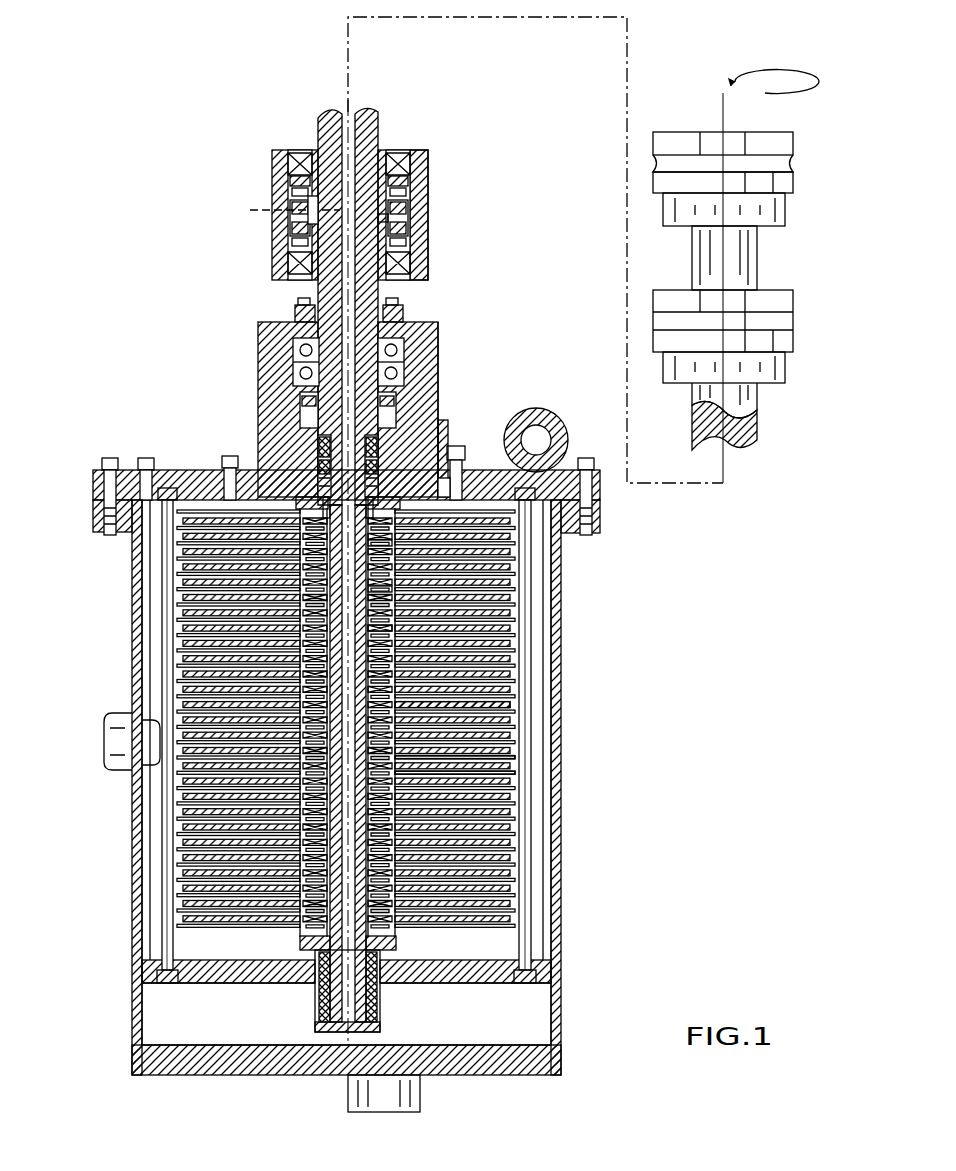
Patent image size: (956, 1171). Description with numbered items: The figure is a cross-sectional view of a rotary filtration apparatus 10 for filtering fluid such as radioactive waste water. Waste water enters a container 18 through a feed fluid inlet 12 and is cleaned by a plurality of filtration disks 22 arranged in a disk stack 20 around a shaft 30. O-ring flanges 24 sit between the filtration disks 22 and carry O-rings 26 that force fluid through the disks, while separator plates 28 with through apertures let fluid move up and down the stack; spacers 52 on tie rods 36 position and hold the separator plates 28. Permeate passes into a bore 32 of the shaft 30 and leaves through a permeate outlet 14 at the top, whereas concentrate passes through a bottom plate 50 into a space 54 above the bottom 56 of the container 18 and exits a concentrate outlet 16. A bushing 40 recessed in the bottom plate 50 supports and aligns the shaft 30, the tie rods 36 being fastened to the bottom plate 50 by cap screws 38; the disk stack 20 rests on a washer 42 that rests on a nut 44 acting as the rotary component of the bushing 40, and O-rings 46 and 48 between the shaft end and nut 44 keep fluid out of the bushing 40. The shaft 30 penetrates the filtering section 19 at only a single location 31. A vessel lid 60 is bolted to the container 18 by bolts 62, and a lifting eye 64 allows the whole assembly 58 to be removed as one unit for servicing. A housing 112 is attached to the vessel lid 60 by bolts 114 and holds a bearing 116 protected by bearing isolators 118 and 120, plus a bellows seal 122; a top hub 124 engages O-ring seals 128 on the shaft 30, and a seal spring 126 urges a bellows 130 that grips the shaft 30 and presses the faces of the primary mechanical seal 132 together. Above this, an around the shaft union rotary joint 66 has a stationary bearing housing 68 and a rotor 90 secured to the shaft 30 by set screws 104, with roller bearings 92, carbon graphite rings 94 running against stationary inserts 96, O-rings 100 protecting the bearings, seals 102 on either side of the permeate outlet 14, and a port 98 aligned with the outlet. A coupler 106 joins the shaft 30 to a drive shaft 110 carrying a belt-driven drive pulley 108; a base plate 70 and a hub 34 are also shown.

The rotary filtration apparatus 10 is at (158, 85).
The feed fluid inlet 12 is at (165, 742).
The permeate outlet 14 is at (300, 210).
The concentrate outlet 16 is at (365, 1110).
The container 18 is at (140, 600).
The filtering section 19 is at (150, 630).
The disk stack 20 is at (510, 830).
The filtration disks 22 is at (512, 710).
The O-ring flanges 24 is at (410, 632).
The O-rings 26 is at (400, 590).
The separator plates 28 is at (512, 780).
The shaft 30 is at (375, 296).
The single location 31 is at (265, 484).
The bore 32 is at (330, 296).
The hub 34 is at (400, 545).
The tie rods 36 is at (170, 882).
The cap screws 38 is at (170, 980).
The bushing 40 is at (325, 990).
The washer 42 is at (392, 955).
The nut 44 is at (372, 950).
The O-ring 46 is at (357, 945).
The O-ring 48 is at (335, 948).
The bottom plate 50 is at (200, 962).
The spacers 52 is at (160, 815).
The space 54 is at (168, 1020).
The bottom 56 is at (498, 1034).
The assembly 58 is at (484, 382).
The vessel lid 60 is at (146, 460).
The bolts 62 is at (108, 460).
The lifting eye 64 is at (549, 416).
The around the shaft union rotary joint 66 is at (434, 160).
The bearing housing 68 is at (428, 152).
The base plate 70 is at (180, 1076).
The rotor 90 is at (393, 150).
The roller bearings 92 is at (305, 168).
The carbon graphite rings 94 is at (284, 185).
The inserts 96 is at (402, 207).
The port 98 is at (292, 230).
The O-rings 100 is at (404, 182).
The seals 102 is at (292, 172).
The set screws 104 is at (402, 228).
The coupler 106 is at (782, 402).
The drive pulley 108 is at (792, 124).
The drive shaft 110 is at (752, 262).
The housing 112 is at (438, 345).
The bolts 114 is at (226, 466).
The bearing 116 is at (300, 350).
The bearing isolator 118 is at (300, 330).
The bearing isolator 120 is at (320, 440).
The bellows seal 122 is at (330, 495).
The top hub 124 is at (330, 515).
The seal spring 126 is at (300, 505).
The O-ring seals 128 is at (448, 478).
The bellows 130 is at (320, 485).
The primary mechanical seal 132 is at (320, 468).